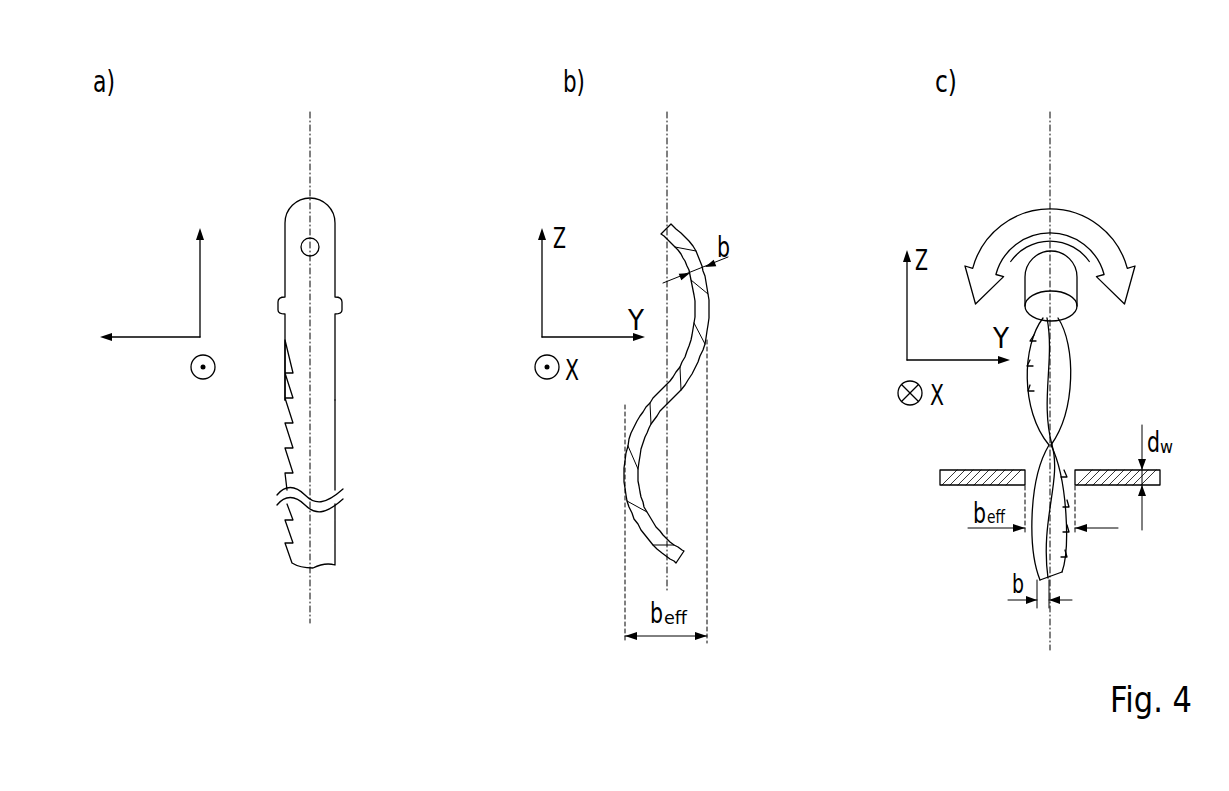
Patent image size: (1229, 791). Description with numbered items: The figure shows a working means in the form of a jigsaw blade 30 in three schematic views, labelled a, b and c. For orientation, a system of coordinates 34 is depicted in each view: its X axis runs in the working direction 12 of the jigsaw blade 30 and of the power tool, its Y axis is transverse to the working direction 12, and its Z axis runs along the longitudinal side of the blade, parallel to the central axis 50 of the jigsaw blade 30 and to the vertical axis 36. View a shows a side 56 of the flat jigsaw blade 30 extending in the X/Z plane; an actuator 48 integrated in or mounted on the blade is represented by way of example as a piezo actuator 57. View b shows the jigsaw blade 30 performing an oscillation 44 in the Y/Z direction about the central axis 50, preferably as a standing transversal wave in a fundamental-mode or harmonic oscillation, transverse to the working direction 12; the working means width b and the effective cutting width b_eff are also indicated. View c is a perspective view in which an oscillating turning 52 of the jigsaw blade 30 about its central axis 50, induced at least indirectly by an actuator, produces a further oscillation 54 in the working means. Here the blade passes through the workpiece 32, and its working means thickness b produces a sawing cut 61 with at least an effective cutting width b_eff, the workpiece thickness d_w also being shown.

The working direction 12 is at (184, 313).
The jigsaw blade 30 is at (322, 443).
The workpiece 32 is at (958, 487).
The system of coordinates 34 is at (213, 337).
The vertical axis 36 is at (1053, 149).
The oscillation 44 is at (677, 385).
The actuator 48 is at (319, 247).
The central axis 50 is at (670, 149).
The oscillating turning 52 is at (1095, 237).
The further oscillation 54 is at (1040, 350).
The side 56 is at (345, 299).
The piezo actuator 57 is at (357, 247).
The sawing cut 61 is at (1070, 472).